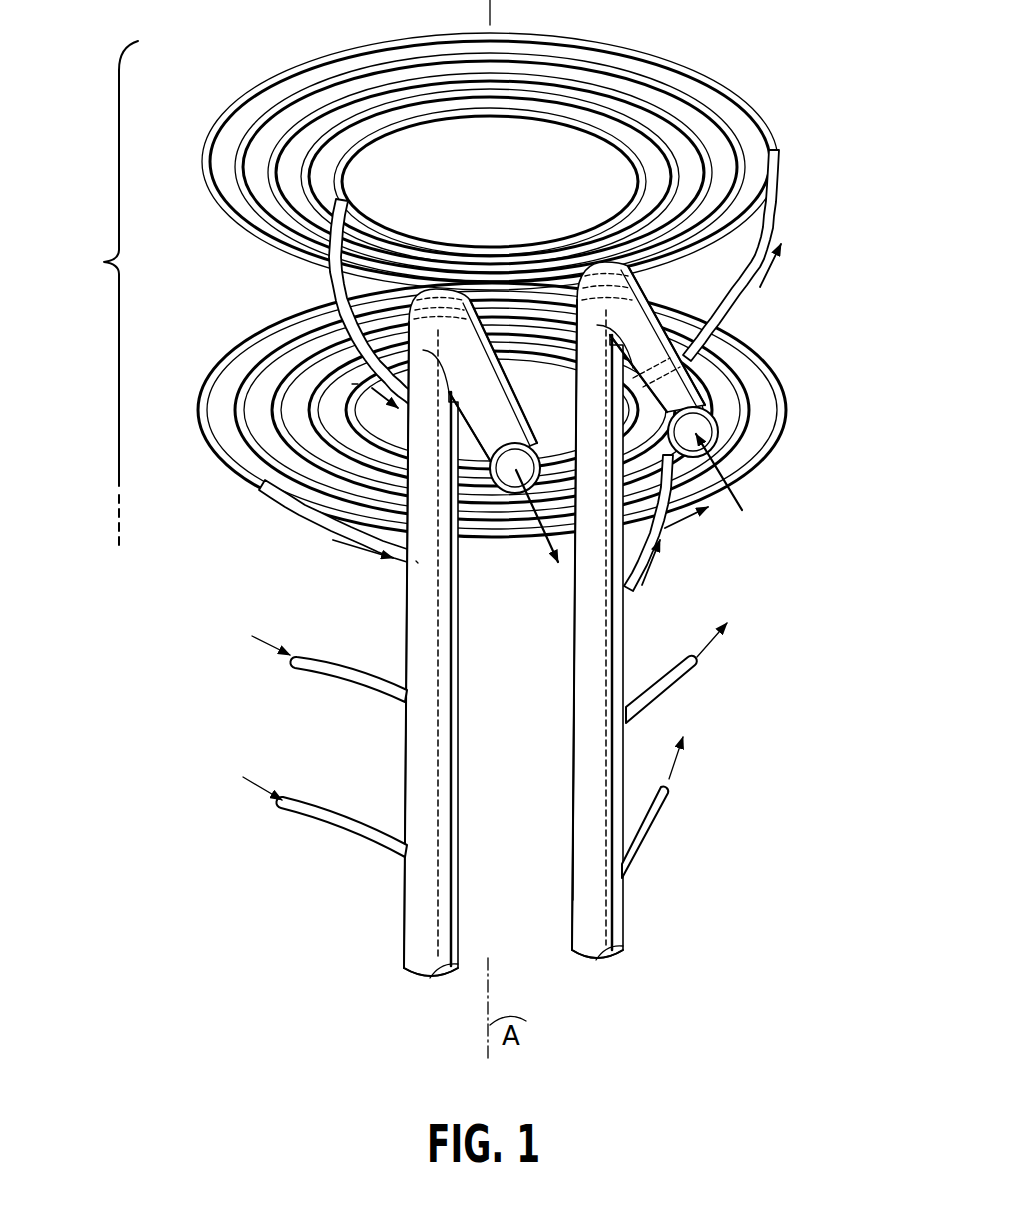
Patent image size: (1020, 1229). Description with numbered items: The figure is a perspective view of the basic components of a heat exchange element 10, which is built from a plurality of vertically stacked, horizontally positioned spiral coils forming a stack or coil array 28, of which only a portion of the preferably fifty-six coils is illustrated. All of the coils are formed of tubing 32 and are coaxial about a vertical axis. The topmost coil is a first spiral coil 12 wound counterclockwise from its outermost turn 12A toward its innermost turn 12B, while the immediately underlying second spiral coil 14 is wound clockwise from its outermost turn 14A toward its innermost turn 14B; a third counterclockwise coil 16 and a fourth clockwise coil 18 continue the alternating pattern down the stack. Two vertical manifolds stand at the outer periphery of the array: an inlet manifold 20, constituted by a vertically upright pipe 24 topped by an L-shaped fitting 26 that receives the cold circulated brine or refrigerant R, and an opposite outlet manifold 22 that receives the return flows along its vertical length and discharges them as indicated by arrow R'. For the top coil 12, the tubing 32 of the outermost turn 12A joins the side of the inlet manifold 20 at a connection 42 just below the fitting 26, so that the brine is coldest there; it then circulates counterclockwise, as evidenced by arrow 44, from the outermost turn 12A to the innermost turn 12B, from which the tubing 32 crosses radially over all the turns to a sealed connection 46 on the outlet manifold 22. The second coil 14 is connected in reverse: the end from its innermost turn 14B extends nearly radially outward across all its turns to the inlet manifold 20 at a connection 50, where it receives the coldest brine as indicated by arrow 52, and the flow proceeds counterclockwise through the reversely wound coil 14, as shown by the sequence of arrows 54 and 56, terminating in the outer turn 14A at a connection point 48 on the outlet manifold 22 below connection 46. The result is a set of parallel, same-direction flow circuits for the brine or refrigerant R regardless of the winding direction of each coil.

The heat exchange element 10 is at (803, 91).
The first spiral coil 12 is at (776, 161).
The outermost turn of coil 12 12A is at (706, 345).
The innermost turn of coil 12 12B is at (345, 193).
The second spiral coil 14 is at (784, 383).
The outermost turn of coil 14 14A is at (763, 437).
The innermost turn of coil 14 14B is at (350, 384).
The third spiral coil 16 is at (342, 683).
The fourth spiral coil 18 is at (326, 812).
The inlet manifold 20 is at (592, 918).
The outlet manifold 22 is at (402, 895).
The vertically upright pipe 24 is at (590, 821).
The L-shaped fitting 26 is at (684, 386).
The stack of coils 28 is at (99, 293).
The tubing 32 is at (201, 172).
The connection 42 is at (612, 385).
The arrow 44 is at (795, 260).
The connection 46 is at (360, 428).
The connection point 48 is at (418, 563).
The connection 50 is at (608, 600).
The arrow 52 is at (645, 565).
The arrow 54 is at (703, 515).
The arrow 56 is at (357, 548).
The brine or refrigerant R is at (742, 478).
The outlet flow arrow R' is at (524, 527).